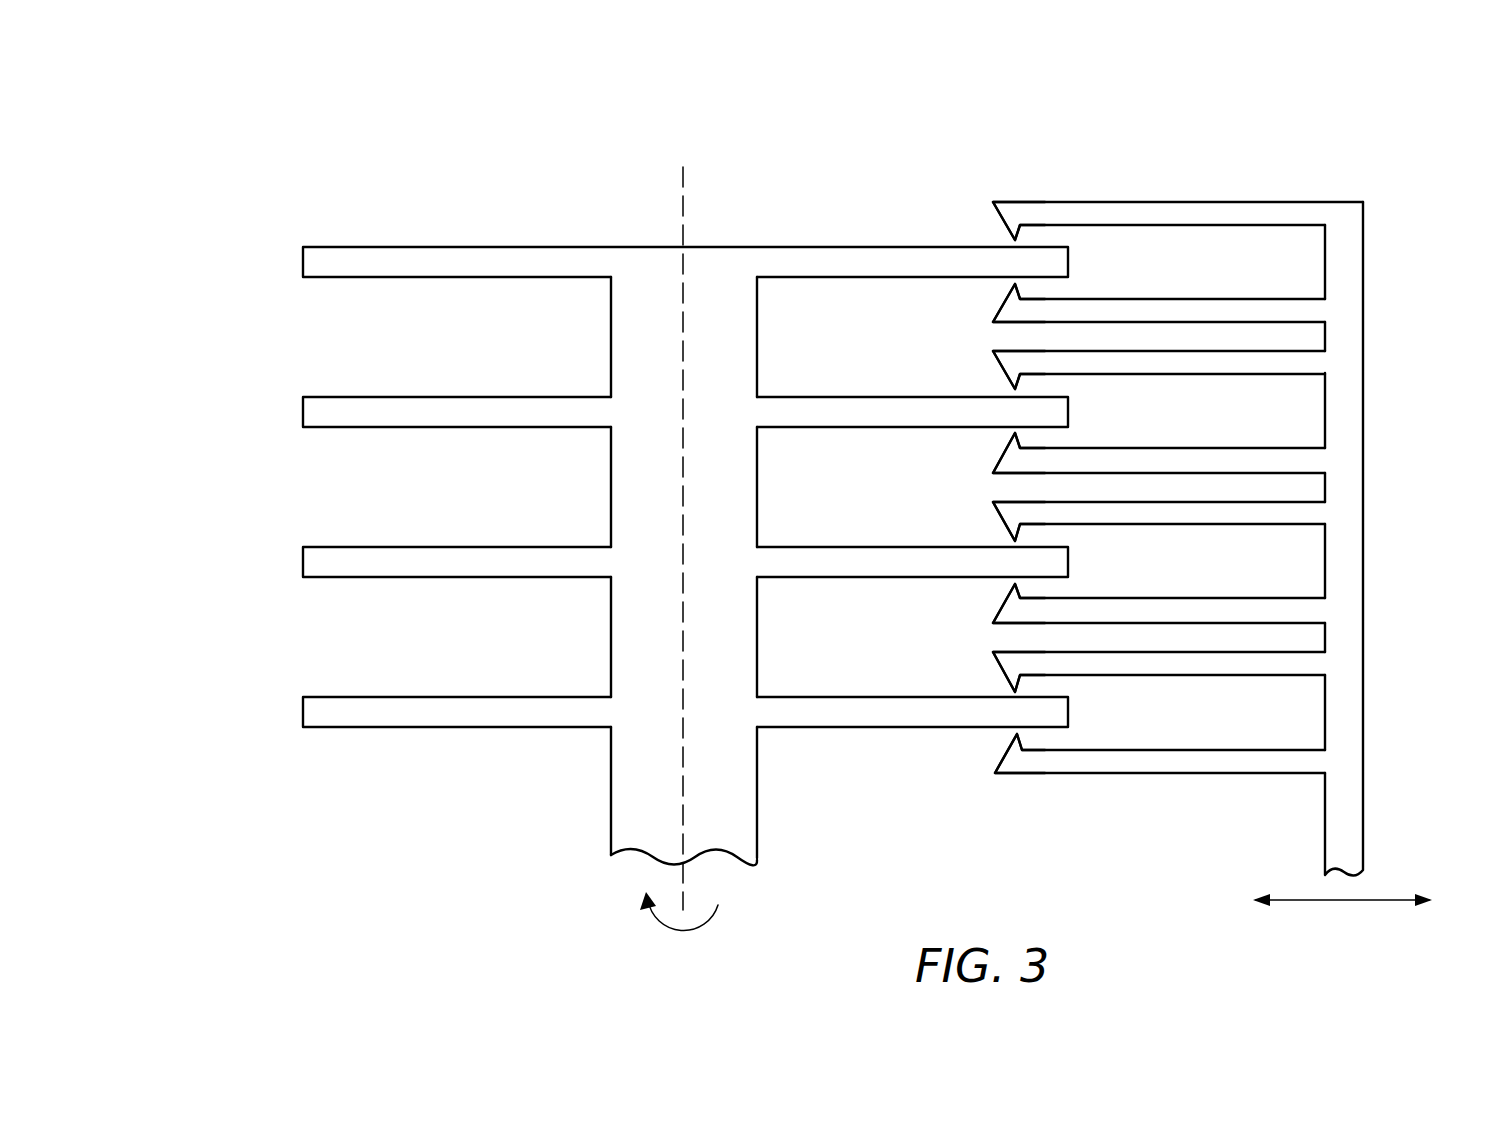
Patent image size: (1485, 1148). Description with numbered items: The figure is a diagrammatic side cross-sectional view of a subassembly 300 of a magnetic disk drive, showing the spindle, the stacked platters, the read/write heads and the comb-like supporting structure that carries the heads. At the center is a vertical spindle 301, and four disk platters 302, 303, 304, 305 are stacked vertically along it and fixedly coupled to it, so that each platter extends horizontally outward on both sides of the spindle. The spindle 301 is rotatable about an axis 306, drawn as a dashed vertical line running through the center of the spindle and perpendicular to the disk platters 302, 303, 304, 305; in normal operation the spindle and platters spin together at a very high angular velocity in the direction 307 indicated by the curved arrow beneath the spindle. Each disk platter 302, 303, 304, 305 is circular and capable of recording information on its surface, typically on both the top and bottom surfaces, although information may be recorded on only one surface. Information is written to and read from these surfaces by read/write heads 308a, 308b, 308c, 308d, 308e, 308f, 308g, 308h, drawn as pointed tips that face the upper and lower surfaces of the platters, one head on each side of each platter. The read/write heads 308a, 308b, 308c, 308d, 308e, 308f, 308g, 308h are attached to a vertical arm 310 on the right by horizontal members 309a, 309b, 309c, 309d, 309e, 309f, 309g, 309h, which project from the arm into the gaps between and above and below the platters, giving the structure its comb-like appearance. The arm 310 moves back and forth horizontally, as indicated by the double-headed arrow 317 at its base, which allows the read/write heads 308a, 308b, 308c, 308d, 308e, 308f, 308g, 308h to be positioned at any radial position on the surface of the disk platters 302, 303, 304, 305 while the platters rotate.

The subassembly 300 is at (834, 128).
The spindle 301 is at (758, 805).
The disk platter 302 is at (405, 247).
The disk platter 303 is at (408, 397).
The disk platter 304 is at (408, 547).
The disk platter 305 is at (407, 657).
The axis 306 is at (684, 877).
The direction 307 is at (718, 910).
The read/write head 308a is at (1017, 202).
The read/write head 308b is at (1000, 297).
The read/write head 308c is at (1000, 362).
The read/write head 308d is at (1000, 446).
The read/write head 308e is at (1000, 522).
The read/write head 308f is at (1000, 595).
The read/write head 308g is at (1000, 668).
The read/write head 308h is at (1010, 745).
The member 309a is at (1223, 202).
The member 309b is at (1215, 299).
The member 309c is at (1212, 373).
The member 309d is at (1205, 448).
The member 309e is at (1212, 525).
The member 309f is at (1202, 598).
The member 309g is at (1215, 677).
The member 309h is at (1207, 775).
The arm 310 is at (1363, 503).
The arrow 317 is at (1330, 903).